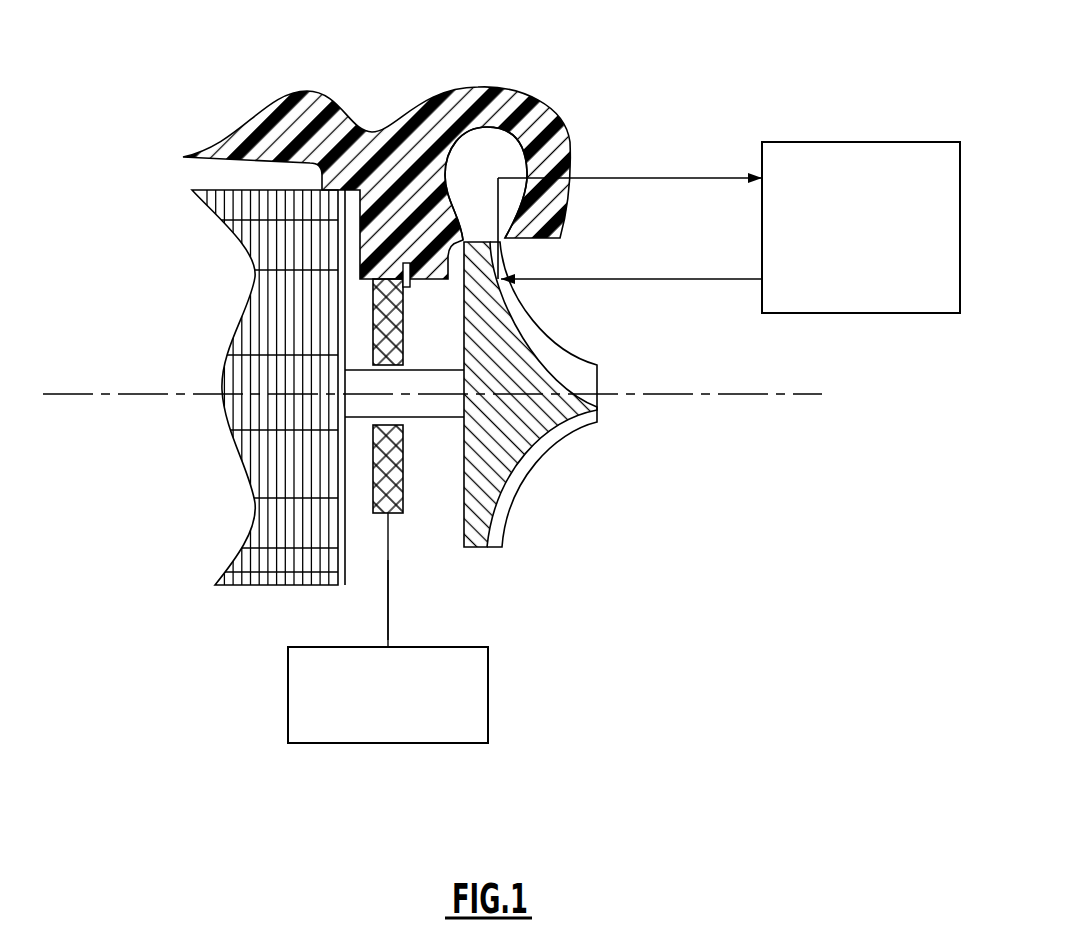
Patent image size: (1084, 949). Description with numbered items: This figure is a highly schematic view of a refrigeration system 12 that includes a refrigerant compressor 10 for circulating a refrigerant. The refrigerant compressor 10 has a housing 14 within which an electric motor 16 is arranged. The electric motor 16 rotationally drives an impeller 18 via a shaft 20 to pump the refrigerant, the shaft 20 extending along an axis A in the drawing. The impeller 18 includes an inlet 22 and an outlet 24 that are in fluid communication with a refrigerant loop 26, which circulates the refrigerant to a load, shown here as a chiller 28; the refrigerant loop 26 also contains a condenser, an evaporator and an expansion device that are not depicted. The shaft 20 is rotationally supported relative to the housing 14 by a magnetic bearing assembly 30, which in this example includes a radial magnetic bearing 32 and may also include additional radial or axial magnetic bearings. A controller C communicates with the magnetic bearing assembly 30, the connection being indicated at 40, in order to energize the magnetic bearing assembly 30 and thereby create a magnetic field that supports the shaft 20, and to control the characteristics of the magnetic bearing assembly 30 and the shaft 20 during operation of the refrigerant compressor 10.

The refrigerant compressor 10 is at (409, 332).
The refrigeration system 12 is at (729, 156).
The housing 14 is at (388, 160).
The electric motor 16 is at (262, 455).
The impeller 18 is at (550, 394).
The shaft 20 is at (438, 403).
The inlet 22 is at (540, 320).
The outlet 24 is at (479, 194).
The refrigerant loop 26 is at (674, 176).
The chiller 28 is at (865, 142).
The magnetic bearing assembly 30 is at (407, 518).
The radial magnetic bearing 32 is at (402, 480).
The signal line 40 is at (385, 597).
The rotation axis A is at (780, 394).
The controller C is at (455, 647).